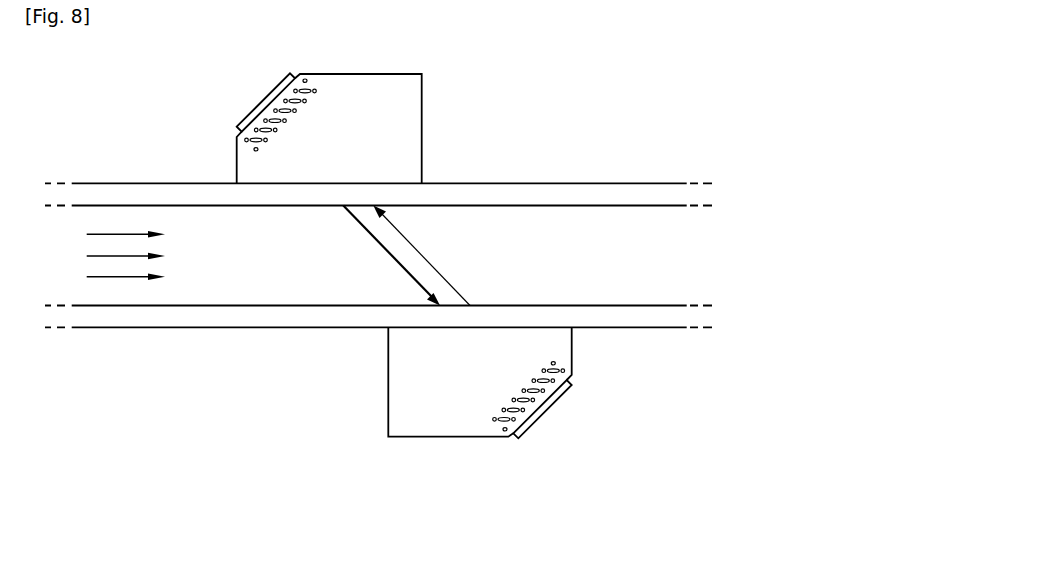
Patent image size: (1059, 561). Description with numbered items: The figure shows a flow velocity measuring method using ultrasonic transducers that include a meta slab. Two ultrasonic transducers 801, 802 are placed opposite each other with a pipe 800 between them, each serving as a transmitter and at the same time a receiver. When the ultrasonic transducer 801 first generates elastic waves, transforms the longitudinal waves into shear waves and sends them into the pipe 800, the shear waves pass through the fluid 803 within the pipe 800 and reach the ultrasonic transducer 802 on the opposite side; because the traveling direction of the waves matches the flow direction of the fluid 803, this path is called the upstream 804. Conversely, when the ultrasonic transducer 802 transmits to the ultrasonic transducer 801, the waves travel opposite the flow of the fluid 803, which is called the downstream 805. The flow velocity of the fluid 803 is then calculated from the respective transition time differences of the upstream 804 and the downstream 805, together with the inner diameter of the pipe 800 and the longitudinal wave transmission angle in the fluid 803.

The pipe 800 is at (602, 188).
The ultrasonic transducer 801 is at (265, 100).
The ultrasonic transducer 802 is at (545, 408).
The fluid 803 is at (76, 267).
The upstream 804 is at (351, 256).
The downstream 805 is at (474, 256).